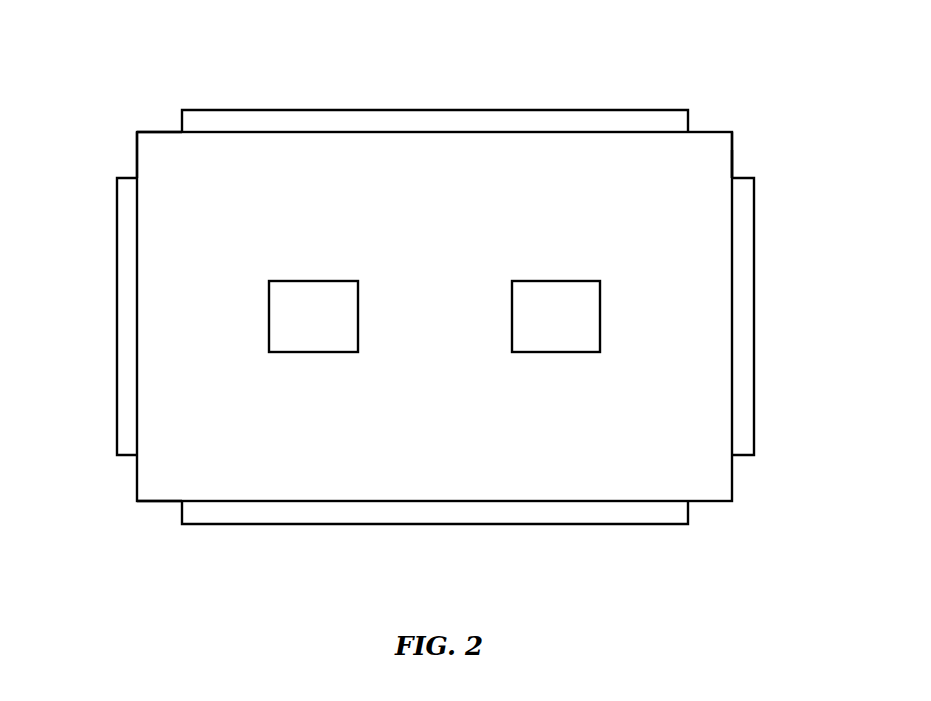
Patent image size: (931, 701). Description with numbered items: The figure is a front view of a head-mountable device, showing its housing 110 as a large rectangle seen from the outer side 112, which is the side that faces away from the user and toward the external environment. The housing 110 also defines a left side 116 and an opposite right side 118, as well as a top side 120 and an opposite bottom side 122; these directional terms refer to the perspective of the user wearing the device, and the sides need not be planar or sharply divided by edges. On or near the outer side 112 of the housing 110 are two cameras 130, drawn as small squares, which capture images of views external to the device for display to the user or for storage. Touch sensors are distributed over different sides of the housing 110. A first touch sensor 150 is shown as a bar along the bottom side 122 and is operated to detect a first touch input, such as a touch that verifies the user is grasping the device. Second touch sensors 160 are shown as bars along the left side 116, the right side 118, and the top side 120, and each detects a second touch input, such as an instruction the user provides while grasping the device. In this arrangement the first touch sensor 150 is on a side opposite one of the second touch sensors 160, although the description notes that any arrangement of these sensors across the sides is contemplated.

The housing 110 is at (135, 140).
The outer side 112 is at (703, 155).
The left side 116 is at (732, 160).
The right side 118 is at (135, 162).
The top side 120 is at (180, 131).
The bottom side 122 is at (172, 503).
The cameras 130 is at (313, 280).
The first touch sensor 150 is at (555, 525).
The second touch sensor 160 is at (433, 110).